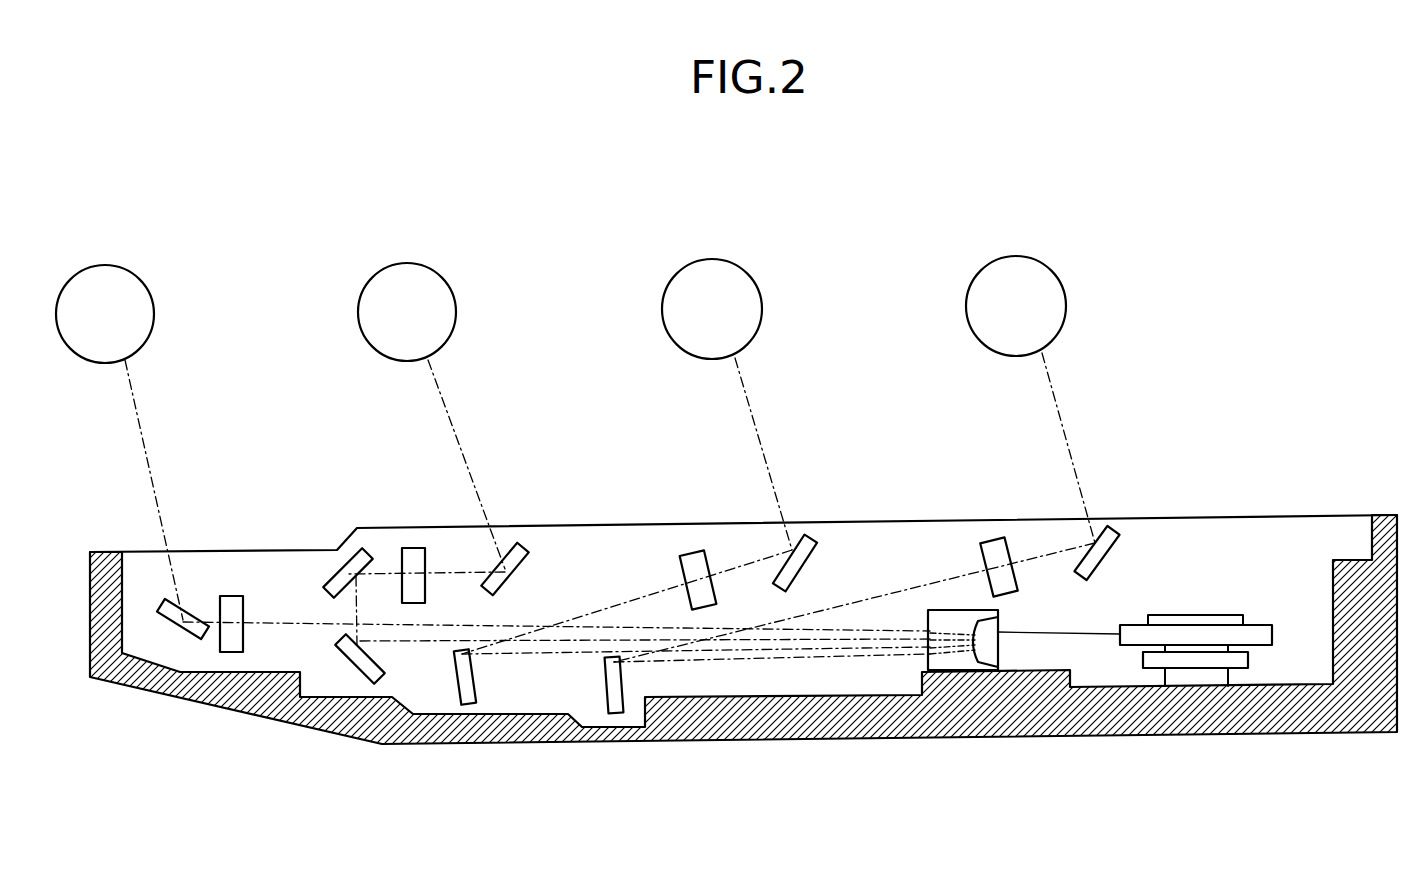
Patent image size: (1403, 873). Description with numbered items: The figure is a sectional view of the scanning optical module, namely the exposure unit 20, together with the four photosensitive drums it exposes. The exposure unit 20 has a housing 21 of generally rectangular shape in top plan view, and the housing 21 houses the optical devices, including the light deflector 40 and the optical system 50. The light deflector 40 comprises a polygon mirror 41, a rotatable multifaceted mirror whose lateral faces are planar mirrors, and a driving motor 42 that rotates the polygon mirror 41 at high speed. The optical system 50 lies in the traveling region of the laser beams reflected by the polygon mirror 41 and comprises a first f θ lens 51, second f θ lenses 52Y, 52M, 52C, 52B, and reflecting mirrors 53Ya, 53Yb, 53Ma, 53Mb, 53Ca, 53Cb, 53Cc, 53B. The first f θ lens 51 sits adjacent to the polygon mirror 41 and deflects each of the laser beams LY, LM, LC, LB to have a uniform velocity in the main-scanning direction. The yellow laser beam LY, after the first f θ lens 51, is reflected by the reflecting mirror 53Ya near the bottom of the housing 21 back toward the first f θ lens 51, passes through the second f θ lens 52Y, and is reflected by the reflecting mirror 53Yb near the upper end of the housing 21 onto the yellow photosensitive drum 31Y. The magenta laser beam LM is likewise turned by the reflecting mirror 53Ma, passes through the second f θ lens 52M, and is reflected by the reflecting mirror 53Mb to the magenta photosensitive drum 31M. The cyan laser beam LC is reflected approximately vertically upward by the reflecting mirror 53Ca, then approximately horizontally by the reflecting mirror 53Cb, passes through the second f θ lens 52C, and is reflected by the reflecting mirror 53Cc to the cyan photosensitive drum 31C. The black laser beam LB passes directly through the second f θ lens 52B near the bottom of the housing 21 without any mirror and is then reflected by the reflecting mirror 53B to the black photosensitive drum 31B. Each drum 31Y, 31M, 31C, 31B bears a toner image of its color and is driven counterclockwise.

The exposure unit 20 is at (1228, 389).
The housing 21 is at (857, 742).
The black photosensitive drum 31B is at (107, 265).
The cyan photosensitive drum 31C is at (408, 263).
The magenta photosensitive drum 31M is at (713, 258).
The yellow photosensitive drum 31Y is at (1017, 255).
The second f θ lens 52B is at (228, 596).
The second f θ lens 52C is at (410, 548).
The second f θ lens 52M is at (690, 553).
The second f θ lens 52Y is at (994, 540).
The reflecting mirror 53B is at (176, 642).
The reflecting mirror 53Ca is at (350, 680).
The reflecting mirror 53Cb is at (348, 550).
The reflecting mirror 53Cc is at (515, 548).
The reflecting mirror 53Ma is at (465, 705).
The reflecting mirror 53Mb is at (801, 538).
The reflecting mirror 53Ya is at (612, 714).
The reflecting mirror 53Yb is at (1104, 528).
The black laser beam LB is at (282, 624).
The cyan laser beam LC is at (420, 650).
The magenta laser beam LM is at (540, 652).
The yellow laser beam LY is at (737, 660).
The optical system 50 is at (898, 546).
The first f θ lens 51 is at (940, 610).
The light deflector 40 is at (1212, 591).
The polygon mirror 41 is at (1262, 625).
The driving motor 42 is at (1197, 686).